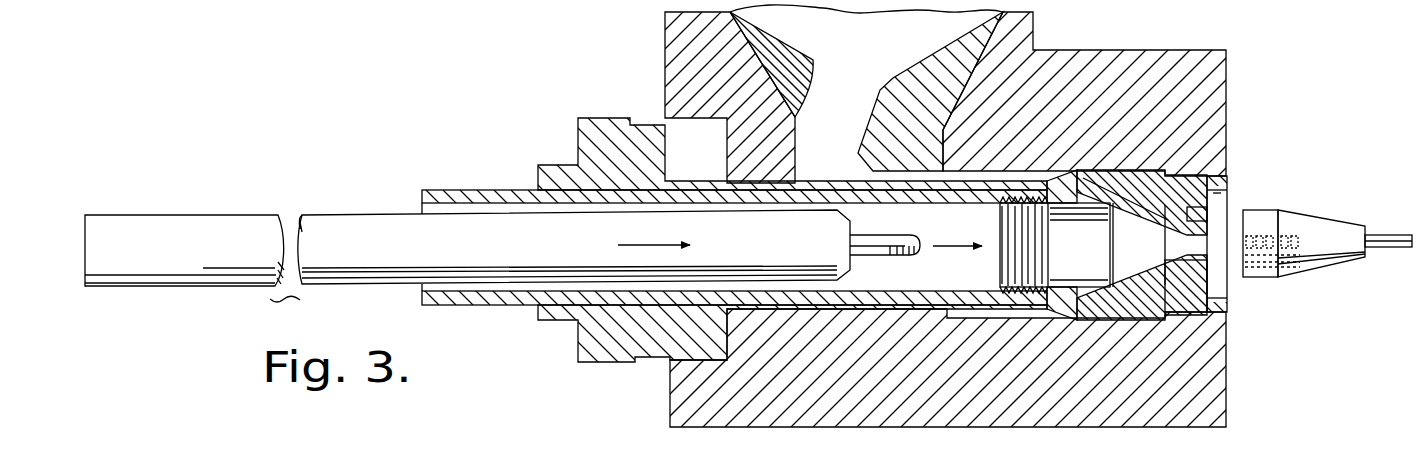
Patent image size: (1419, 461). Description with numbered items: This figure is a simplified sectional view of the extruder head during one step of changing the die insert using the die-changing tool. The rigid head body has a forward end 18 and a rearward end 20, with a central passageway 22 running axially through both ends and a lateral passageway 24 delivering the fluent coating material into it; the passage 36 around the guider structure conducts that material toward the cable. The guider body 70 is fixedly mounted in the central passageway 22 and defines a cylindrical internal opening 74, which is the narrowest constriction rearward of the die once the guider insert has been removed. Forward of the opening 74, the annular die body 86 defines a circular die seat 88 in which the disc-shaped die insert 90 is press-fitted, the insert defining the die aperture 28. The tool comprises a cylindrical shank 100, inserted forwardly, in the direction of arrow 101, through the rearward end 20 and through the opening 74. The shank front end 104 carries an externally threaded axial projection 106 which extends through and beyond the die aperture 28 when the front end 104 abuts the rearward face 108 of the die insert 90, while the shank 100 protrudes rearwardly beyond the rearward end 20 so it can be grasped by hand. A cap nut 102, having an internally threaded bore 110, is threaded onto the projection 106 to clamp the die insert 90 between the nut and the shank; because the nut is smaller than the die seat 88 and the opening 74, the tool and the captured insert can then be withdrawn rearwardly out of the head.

The forward end 18 is at (1230, 377).
The rearward end 20 is at (422, 200).
The central passageway 22 is at (907, 292).
The lateral passageway 24 is at (866, 129).
The die aperture 28 is at (1192, 212).
The passage 36 is at (1090, 300).
The guider body 70 is at (1060, 292).
The internal opening 74 is at (1068, 210).
The die body 86 is at (1130, 178).
The die seat 88 is at (1187, 282).
The die insert 90 is at (1210, 210).
The shank 100 is at (330, 270).
The arrow 101 is at (654, 243).
The cap nut 102 is at (1313, 223).
The front end 104 is at (850, 262).
The externally threaded axial projection 106 is at (882, 237).
The rearward face 108 is at (1180, 265).
The internally threaded bore 110 is at (1255, 233).